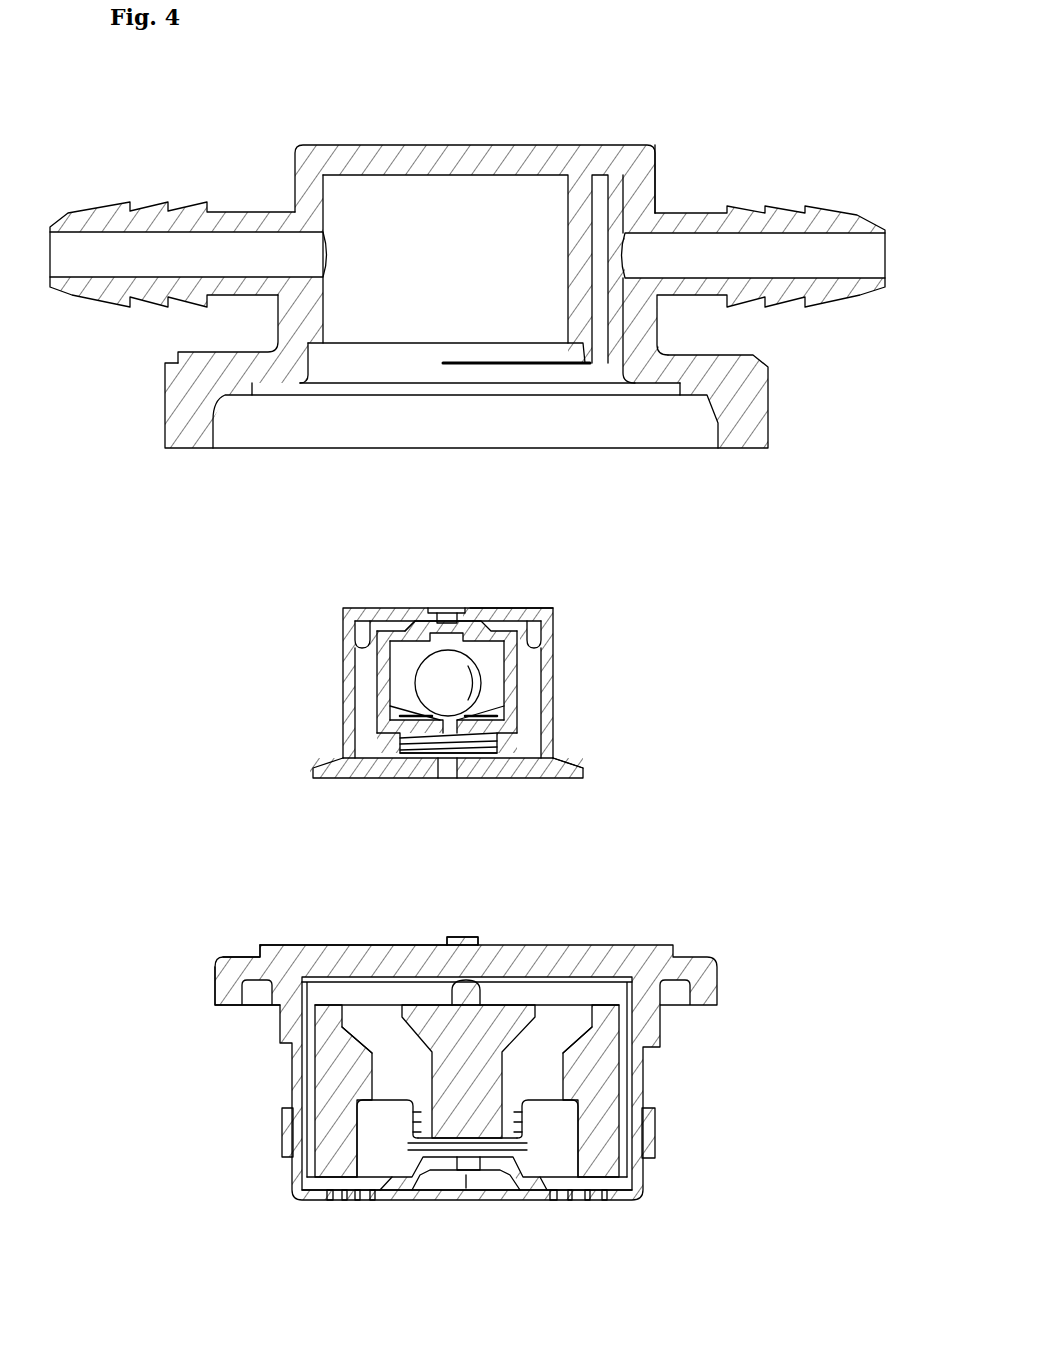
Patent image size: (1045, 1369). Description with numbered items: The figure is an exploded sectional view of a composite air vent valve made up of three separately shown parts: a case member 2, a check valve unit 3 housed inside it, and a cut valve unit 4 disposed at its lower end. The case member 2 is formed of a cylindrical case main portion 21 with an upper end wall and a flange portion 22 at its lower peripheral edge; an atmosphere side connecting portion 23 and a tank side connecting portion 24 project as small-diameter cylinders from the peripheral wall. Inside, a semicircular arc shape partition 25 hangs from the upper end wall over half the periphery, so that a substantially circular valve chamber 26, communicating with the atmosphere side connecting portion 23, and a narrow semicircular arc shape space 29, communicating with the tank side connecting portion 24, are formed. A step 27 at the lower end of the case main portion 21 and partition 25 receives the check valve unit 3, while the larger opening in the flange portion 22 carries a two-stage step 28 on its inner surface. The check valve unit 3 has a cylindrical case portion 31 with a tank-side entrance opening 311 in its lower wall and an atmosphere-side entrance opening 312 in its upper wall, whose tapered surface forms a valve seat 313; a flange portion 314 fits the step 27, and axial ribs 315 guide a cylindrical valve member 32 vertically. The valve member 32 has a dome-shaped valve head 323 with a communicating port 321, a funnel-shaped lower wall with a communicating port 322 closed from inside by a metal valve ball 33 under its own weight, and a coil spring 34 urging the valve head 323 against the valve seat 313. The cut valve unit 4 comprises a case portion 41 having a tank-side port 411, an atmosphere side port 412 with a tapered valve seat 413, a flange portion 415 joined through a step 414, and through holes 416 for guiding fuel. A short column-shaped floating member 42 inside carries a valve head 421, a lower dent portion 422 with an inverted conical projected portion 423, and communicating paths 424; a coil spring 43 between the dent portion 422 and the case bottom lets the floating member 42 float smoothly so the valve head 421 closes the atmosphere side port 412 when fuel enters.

The case member 2 is at (256, 137).
The case main portion 21 is at (505, 162).
The flange portion 22 is at (178, 398).
The atmosphere side connecting portion 23 is at (132, 208).
The tank side connecting portion 24 is at (787, 216).
The partition 25 is at (600, 190).
The valve chamber 26 is at (405, 200).
The step 27 is at (297, 372).
The two-stage step 28 is at (250, 395).
The semicircular arc shape space 29 is at (657, 172).
The check valve unit 3 is at (604, 585).
The case portion 31 is at (552, 702).
The valve member 32 is at (365, 617).
The valve ball 33 is at (423, 693).
The coil spring 34 is at (507, 783).
The tank-side entrance opening 311 is at (448, 780).
The atmosphere-side entrance opening 312 is at (433, 610).
The valve seat 313 is at (495, 613).
The flange portion 314 is at (583, 766).
The ribs 315 is at (365, 680).
The communicating port 321 is at (452, 618).
The communicating port 322 is at (418, 765).
The valve head 323 is at (412, 628).
The cut valve unit 4 is at (718, 912).
The case portion 41 is at (612, 950).
The floating member 42 is at (598, 1083).
The coil spring 43 is at (537, 1158).
The tank-side port 411 is at (468, 1203).
The atmosphere side port 412 is at (468, 936).
The valve seat 413 is at (392, 948).
The step 414 is at (258, 946).
The flange portion 415 is at (215, 971).
The through holes 416 is at (373, 1203).
The valve head 421 is at (483, 995).
The dent portion 422 is at (548, 1142).
The projected portion 423 is at (450, 1122).
The communicating paths 424 is at (400, 1065).